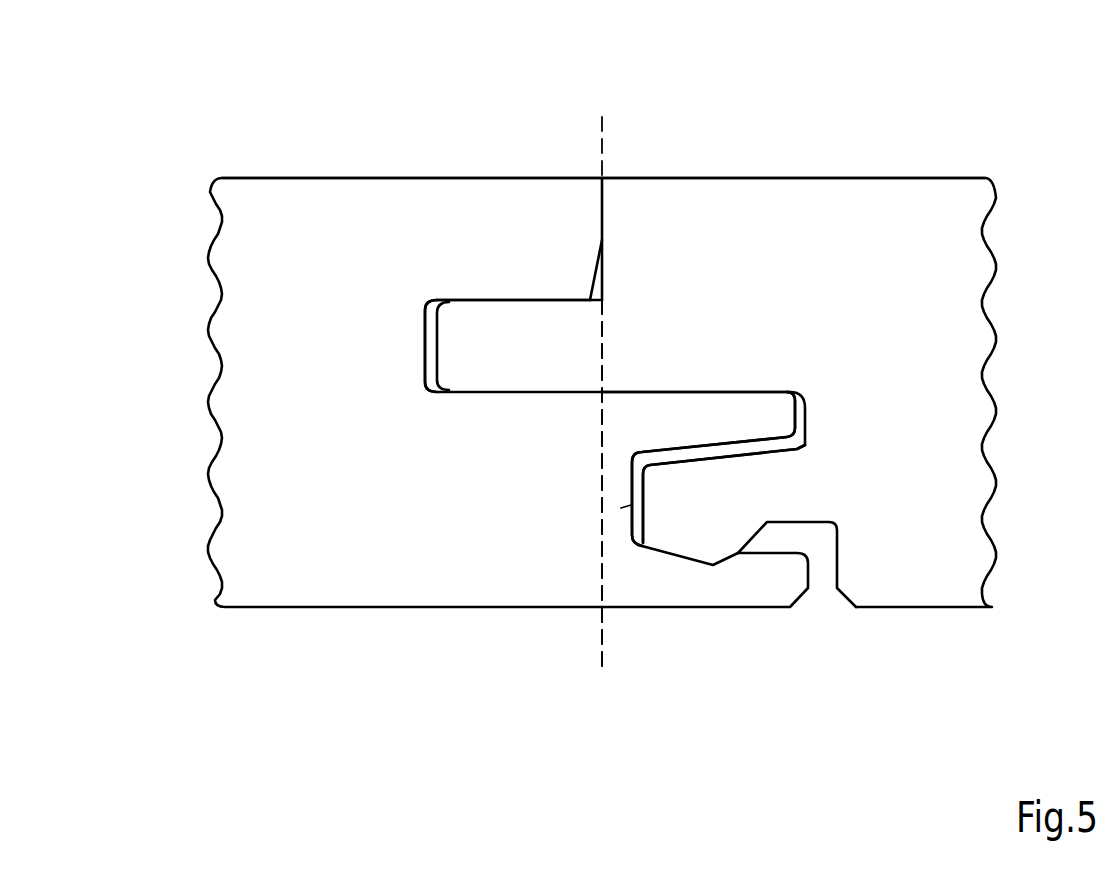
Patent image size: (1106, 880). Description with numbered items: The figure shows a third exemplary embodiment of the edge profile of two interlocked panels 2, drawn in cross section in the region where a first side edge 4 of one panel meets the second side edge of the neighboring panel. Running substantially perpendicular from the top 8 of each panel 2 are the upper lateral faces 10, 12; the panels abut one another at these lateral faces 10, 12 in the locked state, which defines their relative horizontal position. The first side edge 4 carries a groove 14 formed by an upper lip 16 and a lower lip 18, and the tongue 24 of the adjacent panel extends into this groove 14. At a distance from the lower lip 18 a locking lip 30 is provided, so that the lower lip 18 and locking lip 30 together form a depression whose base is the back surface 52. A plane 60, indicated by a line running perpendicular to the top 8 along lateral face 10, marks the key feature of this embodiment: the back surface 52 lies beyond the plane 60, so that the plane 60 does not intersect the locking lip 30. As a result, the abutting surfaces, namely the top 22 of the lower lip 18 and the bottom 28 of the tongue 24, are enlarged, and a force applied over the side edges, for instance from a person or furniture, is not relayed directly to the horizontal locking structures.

The panel 2 is at (303, 203).
The first side edge 4 is at (611, 163).
The top 8 is at (369, 178).
The upper lateral face 10 is at (605, 212).
The upper lateral face 12 is at (596, 270).
The groove 14 is at (428, 340).
The upper lip 16 is at (498, 240).
The lower lip 18 is at (748, 410).
The top of lower lip 22 is at (693, 392).
The tongue 24 is at (510, 365).
The bottom of tongue 28 is at (718, 469).
The locking lip 30 is at (733, 588).
The back surface 52 is at (621, 508).
The plane 60 is at (600, 143).